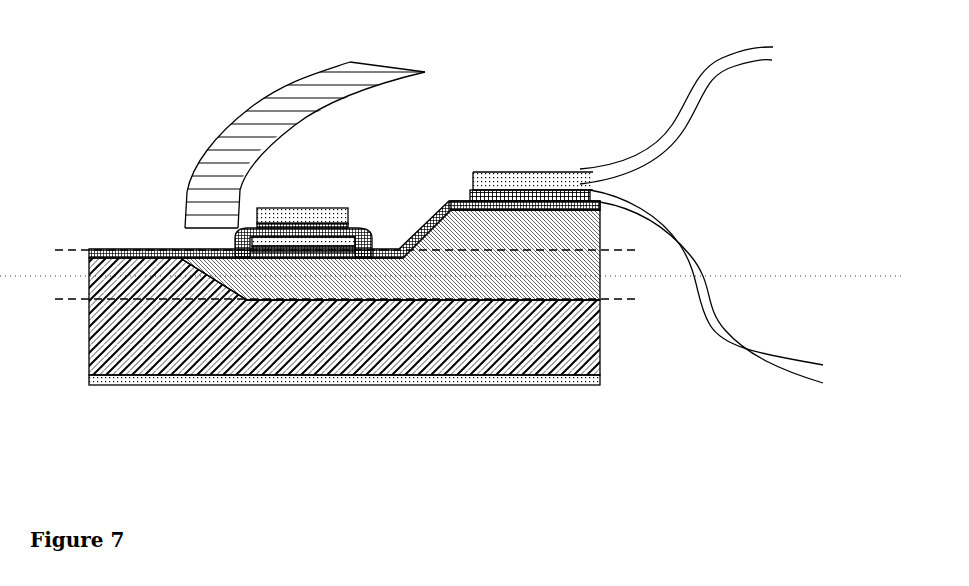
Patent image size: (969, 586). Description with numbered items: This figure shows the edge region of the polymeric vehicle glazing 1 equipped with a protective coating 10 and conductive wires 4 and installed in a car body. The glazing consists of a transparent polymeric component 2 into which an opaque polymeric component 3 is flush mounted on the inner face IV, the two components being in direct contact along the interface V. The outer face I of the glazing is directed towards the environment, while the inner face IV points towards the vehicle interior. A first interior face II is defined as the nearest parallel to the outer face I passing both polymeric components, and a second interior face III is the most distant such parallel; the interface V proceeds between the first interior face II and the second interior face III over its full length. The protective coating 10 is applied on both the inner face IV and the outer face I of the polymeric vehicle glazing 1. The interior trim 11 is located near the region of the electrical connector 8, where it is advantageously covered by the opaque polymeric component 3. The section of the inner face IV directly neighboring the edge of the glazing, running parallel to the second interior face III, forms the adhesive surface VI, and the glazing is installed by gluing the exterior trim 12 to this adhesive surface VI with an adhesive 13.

The polymeric vehicle glazing 1 is at (320, 422).
The transparent polymeric component 2 is at (397, 360).
The opaque polymeric component 3 is at (440, 240).
The conductive wires 4 is at (175, 256).
The electrical connector 8 is at (278, 195).
The protective coating 10 is at (580, 378).
The interior trim 11 is at (308, 95).
The exterior trim 12 is at (688, 247).
The adhesive 13 is at (510, 190).
The outer face I is at (183, 375).
The first interior face II is at (338, 302).
The second interior face III is at (336, 252).
The inner face IV is at (128, 247).
The interface V is at (447, 302).
The adhesive surface VI is at (455, 197).